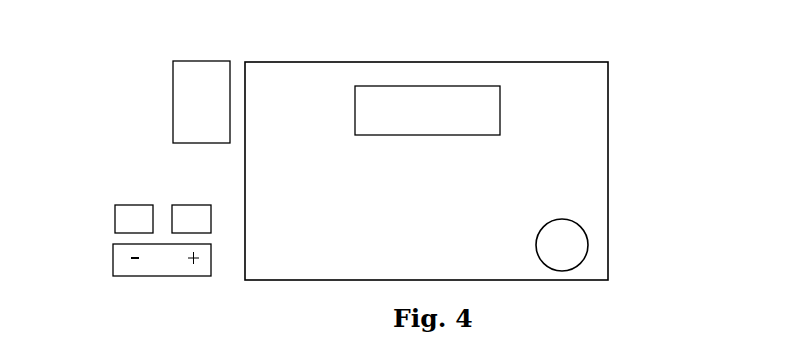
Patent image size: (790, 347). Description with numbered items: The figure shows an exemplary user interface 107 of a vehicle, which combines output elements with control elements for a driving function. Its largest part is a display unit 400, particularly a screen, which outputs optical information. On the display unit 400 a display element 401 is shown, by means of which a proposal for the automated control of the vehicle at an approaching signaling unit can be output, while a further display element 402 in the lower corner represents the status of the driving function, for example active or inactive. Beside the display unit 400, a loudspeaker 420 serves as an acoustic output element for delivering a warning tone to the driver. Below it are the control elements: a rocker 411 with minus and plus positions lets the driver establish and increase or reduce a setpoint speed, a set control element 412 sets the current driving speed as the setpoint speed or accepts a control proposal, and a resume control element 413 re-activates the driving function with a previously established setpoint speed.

The user interface 107 is at (635, 72).
The display unit 400 is at (609, 141).
The display element 401 is at (402, 100).
The display element 402 is at (578, 250).
The rocker 411 is at (125, 260).
The set control element 412 is at (118, 213).
The resume control element 413 is at (187, 210).
The loudspeaker 420 is at (182, 85).